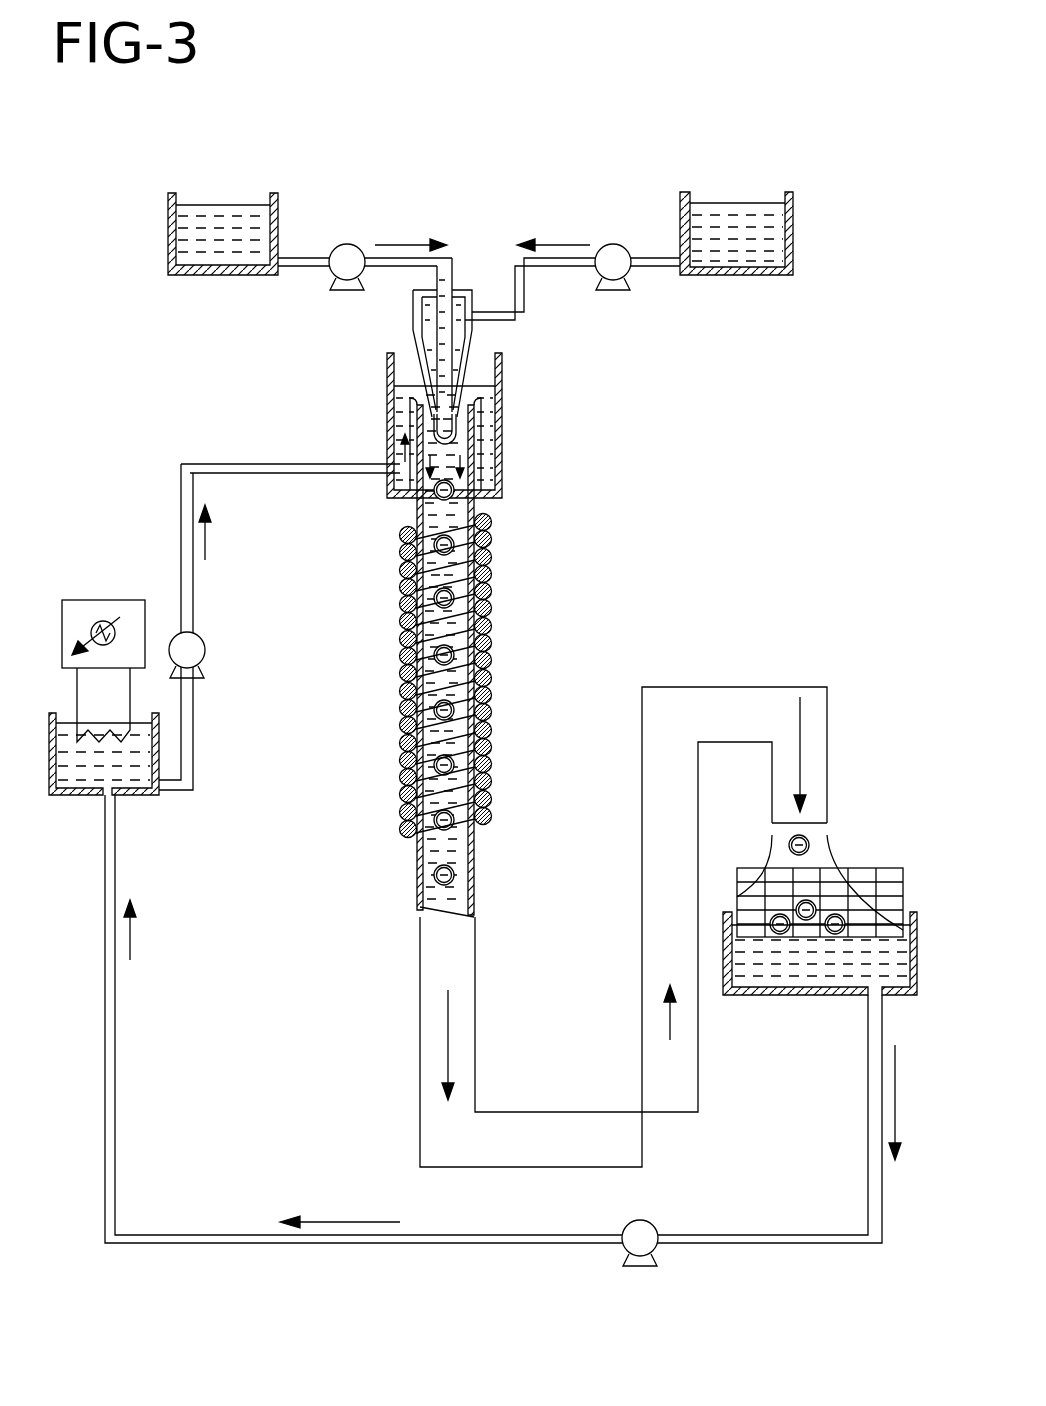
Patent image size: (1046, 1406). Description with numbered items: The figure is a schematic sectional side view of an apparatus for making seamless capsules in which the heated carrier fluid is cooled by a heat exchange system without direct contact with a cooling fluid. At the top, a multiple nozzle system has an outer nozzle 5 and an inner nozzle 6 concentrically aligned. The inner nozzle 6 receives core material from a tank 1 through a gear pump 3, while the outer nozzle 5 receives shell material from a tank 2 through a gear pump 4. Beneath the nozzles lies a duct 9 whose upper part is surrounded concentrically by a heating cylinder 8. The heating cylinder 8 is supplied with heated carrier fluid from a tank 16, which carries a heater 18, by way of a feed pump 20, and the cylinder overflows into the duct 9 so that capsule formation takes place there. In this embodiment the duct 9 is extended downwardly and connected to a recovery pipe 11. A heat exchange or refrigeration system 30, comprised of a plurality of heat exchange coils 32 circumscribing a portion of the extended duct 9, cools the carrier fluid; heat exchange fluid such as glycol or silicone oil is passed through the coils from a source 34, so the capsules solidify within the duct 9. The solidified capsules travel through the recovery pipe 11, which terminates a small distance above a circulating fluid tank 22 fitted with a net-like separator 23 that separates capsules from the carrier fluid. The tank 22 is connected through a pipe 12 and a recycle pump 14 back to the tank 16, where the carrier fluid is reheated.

The tank 1 is at (276, 193).
The tank 2 is at (793, 192).
The gear pump 3 is at (352, 262).
The gear pump 4 is at (613, 262).
The outer nozzle 5 is at (420, 335).
The inner nozzle 6 is at (452, 262).
The heating cylinder 8 is at (388, 358).
The duct 9 is at (497, 440).
The recovery pipe 11 is at (737, 687).
The pipe 12 is at (473, 1234).
The recycle pump 14 is at (640, 1240).
The tank 16 is at (80, 796).
The heater 18 is at (103, 600).
The feed pump 20 is at (190, 650).
The circulating fluid tank 22 is at (801, 996).
The net-like separator 23 is at (863, 868).
The heat exchange system 30 is at (496, 676).
The heat exchange coils 32 is at (492, 660).
The source 34 is at (492, 626).